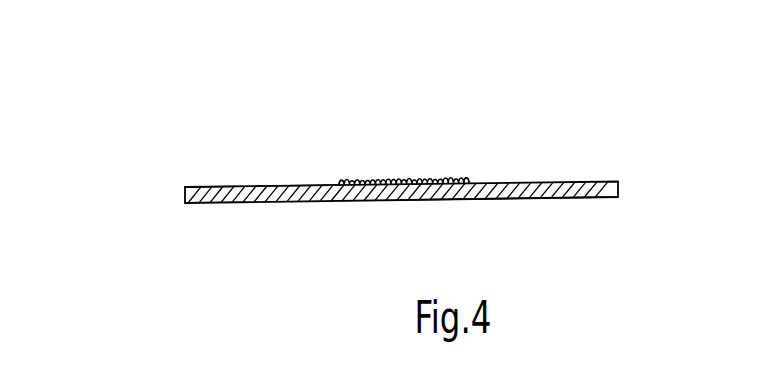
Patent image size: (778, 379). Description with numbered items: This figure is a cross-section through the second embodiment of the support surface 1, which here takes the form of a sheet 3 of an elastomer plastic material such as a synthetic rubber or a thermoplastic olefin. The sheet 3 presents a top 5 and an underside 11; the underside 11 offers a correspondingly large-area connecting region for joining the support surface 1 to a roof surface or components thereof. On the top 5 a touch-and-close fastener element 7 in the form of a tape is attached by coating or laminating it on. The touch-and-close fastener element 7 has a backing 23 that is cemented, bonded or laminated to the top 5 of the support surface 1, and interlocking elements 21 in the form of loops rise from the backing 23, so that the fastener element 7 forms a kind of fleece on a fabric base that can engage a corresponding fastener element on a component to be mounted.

The support surface 1 is at (185, 140).
The sheet 3 is at (260, 203).
The top 5 is at (213, 186).
The touch-and-close fastener element 7 is at (465, 178).
The underside 11 is at (535, 198).
The interlocking elements 21 is at (393, 178).
The backing 23 is at (335, 184).